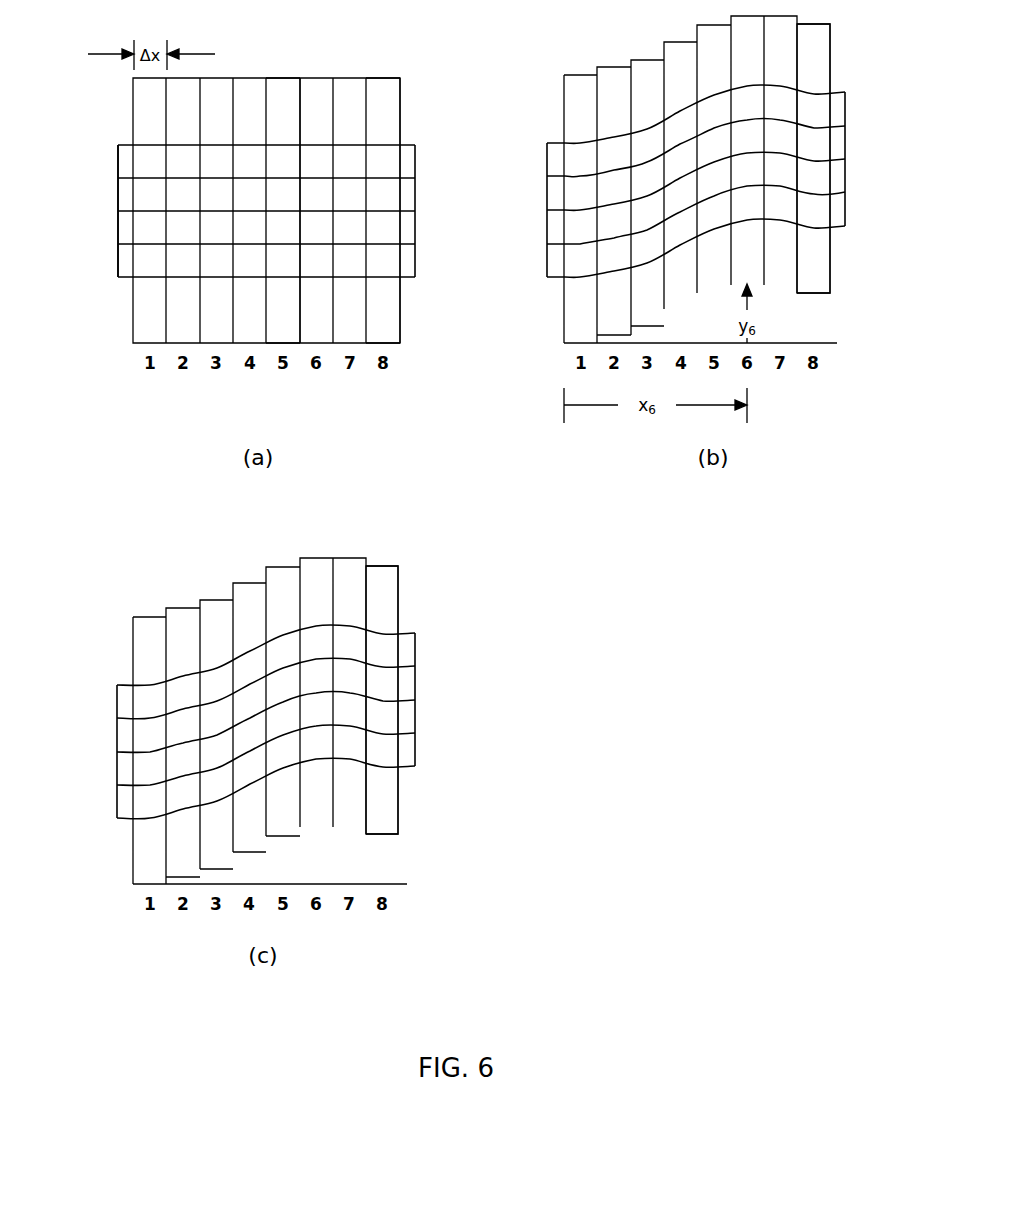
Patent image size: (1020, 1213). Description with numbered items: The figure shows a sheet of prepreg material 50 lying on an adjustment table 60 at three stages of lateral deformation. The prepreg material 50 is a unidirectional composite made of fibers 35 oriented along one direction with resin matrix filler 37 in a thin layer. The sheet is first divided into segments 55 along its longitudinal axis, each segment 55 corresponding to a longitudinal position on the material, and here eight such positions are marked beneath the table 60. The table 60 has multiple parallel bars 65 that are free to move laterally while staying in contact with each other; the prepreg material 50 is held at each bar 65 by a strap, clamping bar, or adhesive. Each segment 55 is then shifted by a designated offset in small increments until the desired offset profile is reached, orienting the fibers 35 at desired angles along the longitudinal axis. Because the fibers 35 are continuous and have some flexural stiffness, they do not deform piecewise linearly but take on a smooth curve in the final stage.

In FIG. 6A, the fibers 35 is at (420, 138).
In FIG. 6B, the fibers 35 is at (845, 226).
In FIG. 6C, the fibers 35 is at (415, 633).
In FIG. 6A, the resin matrix filler 37 is at (390, 166).
In FIG. 6A, the prepreg material 50 is at (415, 230).
In FIG. 6B, the prepreg material 50 is at (846, 150).
In FIG. 6C, the prepreg material 50 is at (414, 713).
In FIG. 6A, the segment 55 is at (142, 264).
In FIG. 6A, the table 60 is at (296, 176).
In FIG. 6B, the table 60 is at (734, 179).
In FIG. 6C, the table 60 is at (302, 707).
In FIG. 6A, the parallel bars 65 is at (286, 100).
In FIG. 6B, the parallel bars 65 is at (818, 257).
In FIG. 6C, the parallel bars 65 is at (388, 808).